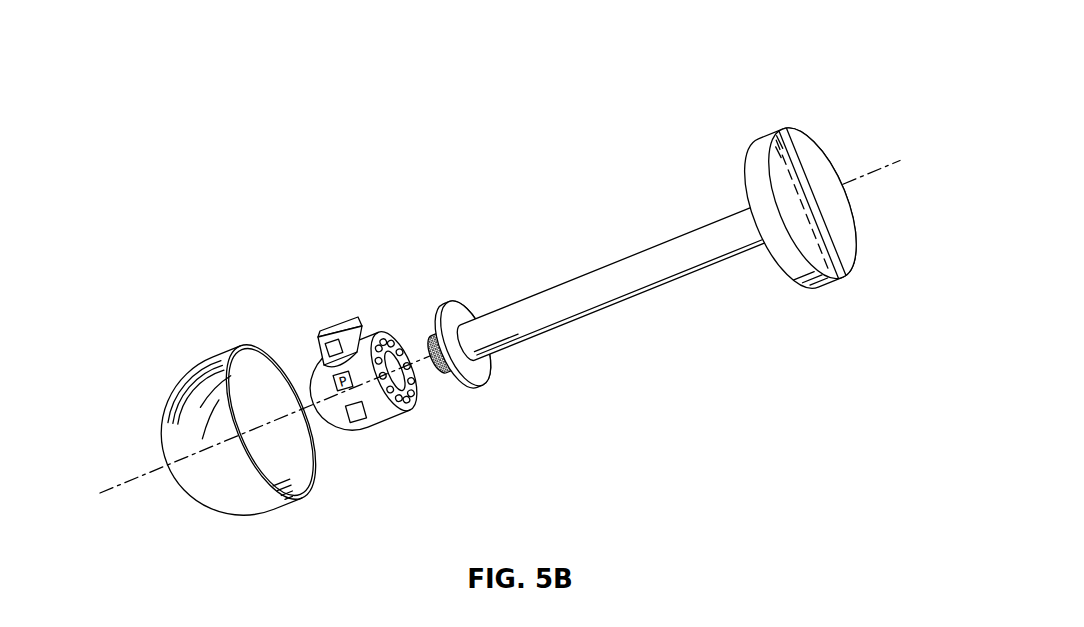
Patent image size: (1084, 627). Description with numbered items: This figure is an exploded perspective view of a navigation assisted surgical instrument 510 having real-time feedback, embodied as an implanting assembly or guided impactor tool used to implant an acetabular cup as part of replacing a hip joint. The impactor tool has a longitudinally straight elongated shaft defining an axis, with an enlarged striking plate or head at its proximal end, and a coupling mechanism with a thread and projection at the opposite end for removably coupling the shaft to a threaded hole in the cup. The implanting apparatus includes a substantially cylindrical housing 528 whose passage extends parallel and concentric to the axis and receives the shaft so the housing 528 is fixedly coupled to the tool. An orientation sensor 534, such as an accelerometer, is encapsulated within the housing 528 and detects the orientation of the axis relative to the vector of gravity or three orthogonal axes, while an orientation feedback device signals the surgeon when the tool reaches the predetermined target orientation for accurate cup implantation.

The navigation assisted surgical instrument 510 is at (583, 228).
The housing 528 is at (352, 423).
The orientation sensor 534 is at (313, 372).